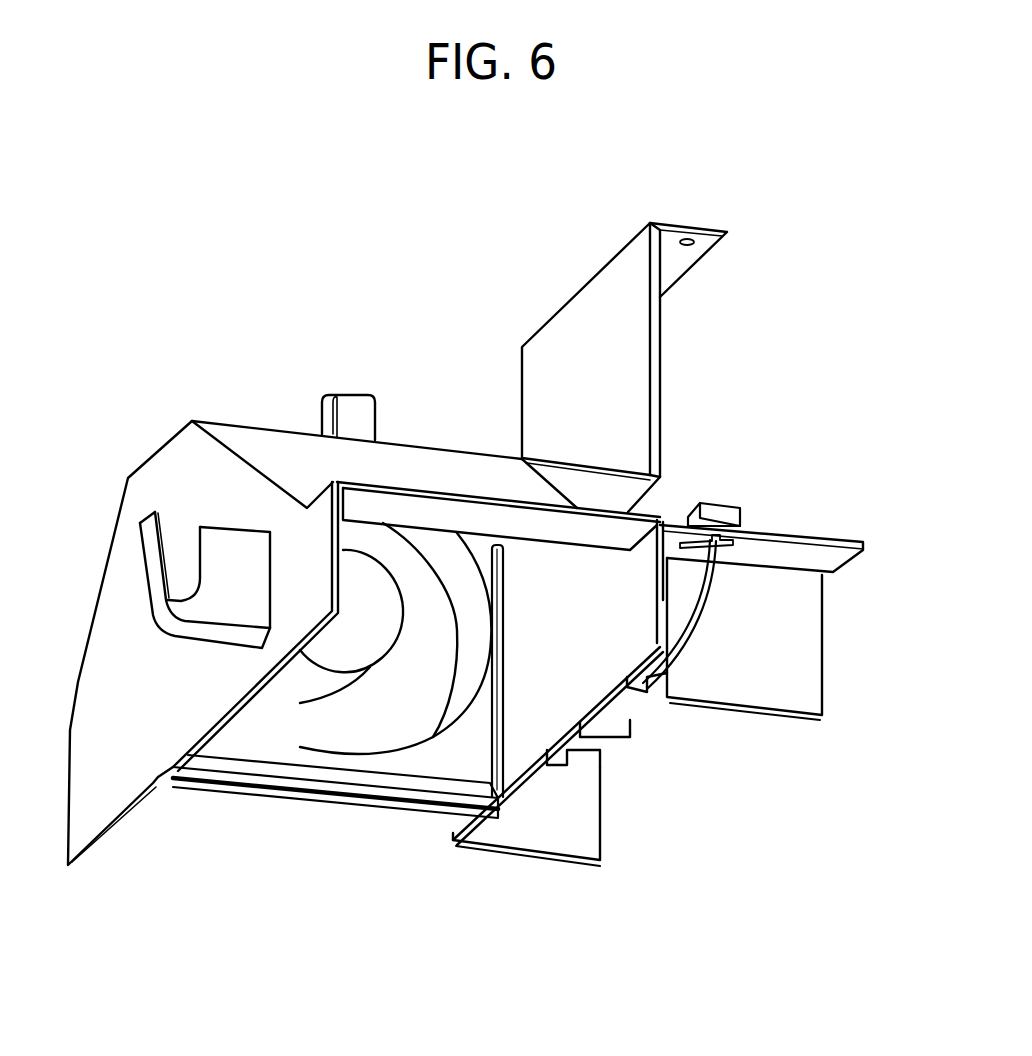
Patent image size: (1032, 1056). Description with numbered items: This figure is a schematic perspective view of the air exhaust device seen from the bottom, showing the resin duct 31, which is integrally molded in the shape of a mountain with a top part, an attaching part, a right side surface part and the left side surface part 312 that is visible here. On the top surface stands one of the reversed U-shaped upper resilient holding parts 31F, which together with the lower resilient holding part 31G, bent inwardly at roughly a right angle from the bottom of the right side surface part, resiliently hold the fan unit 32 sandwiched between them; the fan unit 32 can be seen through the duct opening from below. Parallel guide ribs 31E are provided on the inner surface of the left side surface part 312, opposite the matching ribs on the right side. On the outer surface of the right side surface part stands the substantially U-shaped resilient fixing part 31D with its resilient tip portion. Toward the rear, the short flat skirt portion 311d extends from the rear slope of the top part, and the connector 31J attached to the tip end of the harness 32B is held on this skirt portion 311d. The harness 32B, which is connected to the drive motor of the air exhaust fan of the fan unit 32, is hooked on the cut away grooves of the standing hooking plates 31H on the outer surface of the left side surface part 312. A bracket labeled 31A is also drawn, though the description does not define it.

The duct 31 is at (195, 355).
The mounting bracket 31A is at (632, 383).
The resilient fixing part 31D is at (187, 602).
The guide ribs 31E is at (500, 723).
The upper resilient holding parts 31F is at (352, 407).
The lower resilient holding part 31G is at (392, 805).
The hooking plates 31H is at (810, 690).
The connector 31J is at (718, 508).
The short flat skirt portion 311d is at (837, 556).
The left side surface part 312 is at (579, 652).
The fan unit 32 is at (253, 744).
The harness 32B is at (696, 627).